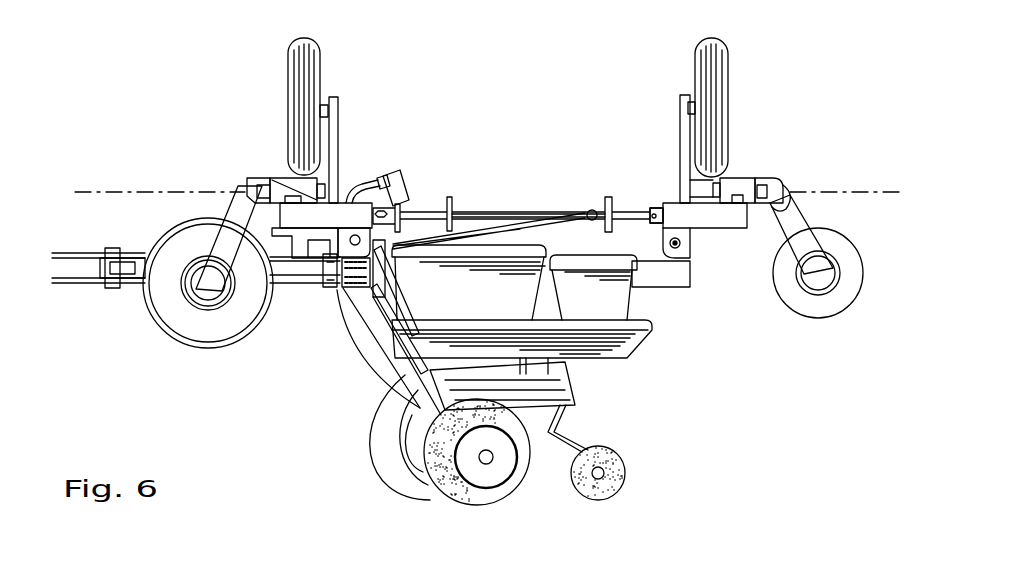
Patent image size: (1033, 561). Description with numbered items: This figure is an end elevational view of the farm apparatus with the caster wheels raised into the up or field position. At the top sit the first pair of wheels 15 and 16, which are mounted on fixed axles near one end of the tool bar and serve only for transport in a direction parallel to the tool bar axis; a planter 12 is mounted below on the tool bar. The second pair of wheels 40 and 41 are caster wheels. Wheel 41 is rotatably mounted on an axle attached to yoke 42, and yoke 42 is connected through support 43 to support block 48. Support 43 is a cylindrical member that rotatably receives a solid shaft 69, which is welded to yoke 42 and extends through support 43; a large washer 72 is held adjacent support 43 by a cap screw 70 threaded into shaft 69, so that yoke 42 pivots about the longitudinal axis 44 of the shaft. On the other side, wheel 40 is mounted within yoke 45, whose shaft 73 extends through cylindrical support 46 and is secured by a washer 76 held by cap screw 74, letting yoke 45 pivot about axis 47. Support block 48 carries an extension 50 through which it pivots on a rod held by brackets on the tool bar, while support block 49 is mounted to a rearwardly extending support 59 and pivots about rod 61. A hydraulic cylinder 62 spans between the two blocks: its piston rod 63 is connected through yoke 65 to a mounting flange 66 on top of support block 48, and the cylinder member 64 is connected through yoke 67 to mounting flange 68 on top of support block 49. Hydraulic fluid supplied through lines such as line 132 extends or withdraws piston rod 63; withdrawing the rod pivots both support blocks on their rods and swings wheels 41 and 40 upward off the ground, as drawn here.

The planter 12 is at (630, 352).
The wheel 15 is at (728, 52).
The wheel 16 is at (287, 52).
The caster wheel 40 is at (818, 318).
The caster wheel 41 is at (200, 346).
The yoke 42 is at (240, 254).
The support 43 is at (284, 182).
The axis 44 is at (135, 190).
The yoke 45 is at (808, 220).
The support 46 is at (723, 196).
The axis 47 is at (872, 193).
The support block 48 is at (341, 200).
The support block 49 is at (708, 230).
The extension 50 is at (358, 252).
The support 59 is at (665, 288).
The rod 61 is at (682, 245).
The hydraulic cylinder 62 is at (488, 208).
The piston rod 63 is at (416, 205).
The member 64 is at (618, 207).
The yoke 65 is at (390, 200).
The mounting flange 66 is at (378, 200).
The yoke 67 is at (646, 205).
The mounting flange 68 is at (658, 207).
The solid shaft 69 is at (250, 186).
The cap screw 70 is at (343, 195).
The washer 72 is at (285, 185).
The solid shaft 73 is at (788, 182).
The cap screw 74 is at (715, 188).
The washer 76 is at (740, 178).
The hydraulic line 132 is at (555, 207).